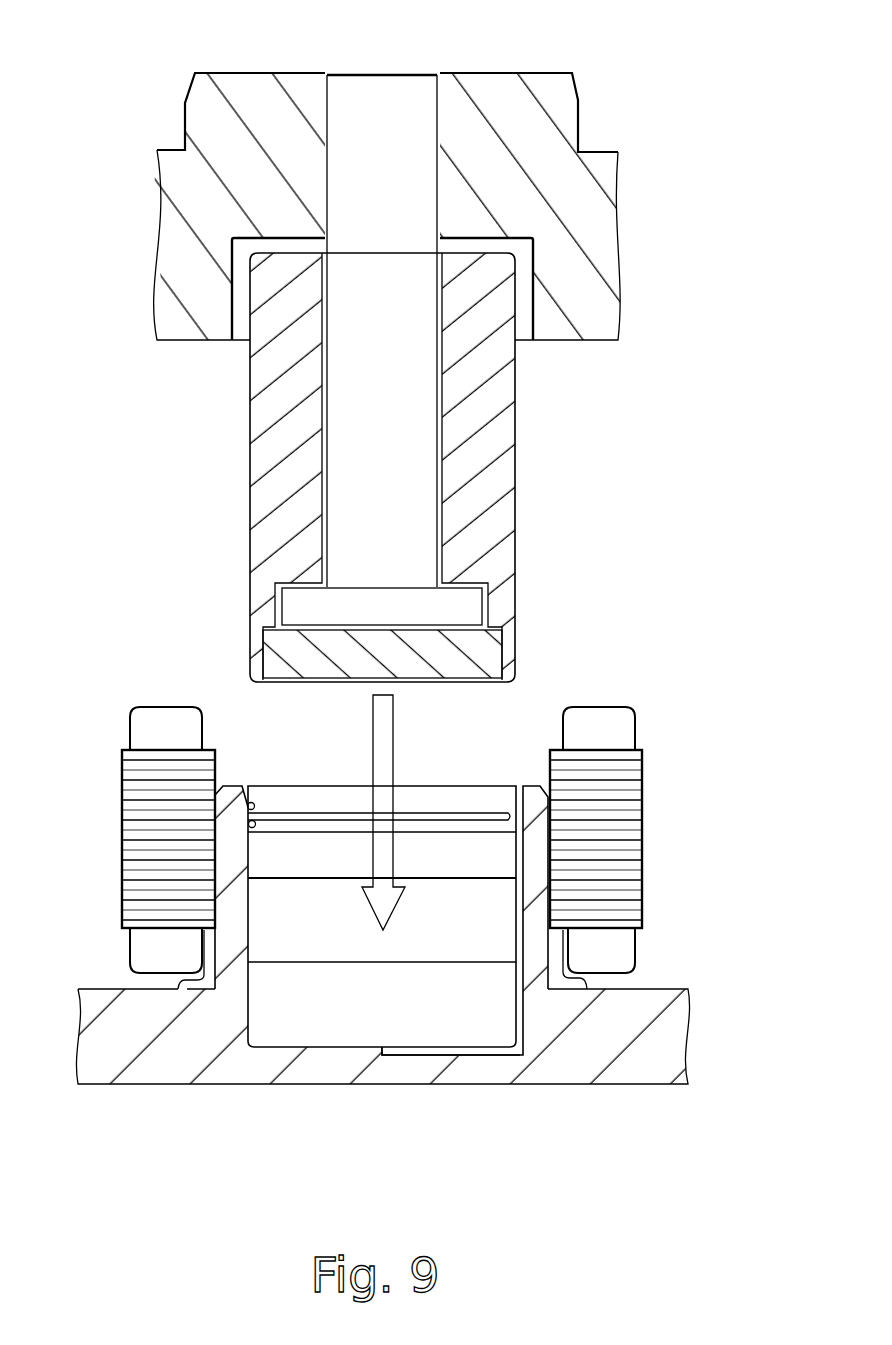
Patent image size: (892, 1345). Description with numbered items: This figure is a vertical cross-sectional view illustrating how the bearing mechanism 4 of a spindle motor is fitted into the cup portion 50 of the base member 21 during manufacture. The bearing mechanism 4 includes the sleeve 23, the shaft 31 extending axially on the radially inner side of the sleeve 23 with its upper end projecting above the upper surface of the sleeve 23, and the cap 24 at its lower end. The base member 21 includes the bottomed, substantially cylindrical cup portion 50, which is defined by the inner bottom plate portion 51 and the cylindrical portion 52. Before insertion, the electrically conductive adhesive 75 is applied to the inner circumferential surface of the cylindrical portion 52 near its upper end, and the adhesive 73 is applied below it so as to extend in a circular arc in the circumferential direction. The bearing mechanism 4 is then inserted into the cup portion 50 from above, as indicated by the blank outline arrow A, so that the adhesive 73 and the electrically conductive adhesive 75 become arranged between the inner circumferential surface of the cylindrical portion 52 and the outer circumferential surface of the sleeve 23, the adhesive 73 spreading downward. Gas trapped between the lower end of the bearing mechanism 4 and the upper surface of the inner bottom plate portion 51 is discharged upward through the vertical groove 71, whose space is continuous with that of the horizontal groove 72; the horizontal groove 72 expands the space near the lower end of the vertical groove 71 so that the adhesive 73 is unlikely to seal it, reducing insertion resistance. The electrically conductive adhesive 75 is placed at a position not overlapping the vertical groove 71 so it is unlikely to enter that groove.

The bearing mechanism 4 is at (230, 457).
The shaft 31 is at (390, 105).
The sleeve 23 is at (493, 433).
The cap 24 is at (430, 668).
The base member 21 is at (573, 1093).
The cup portion 50 is at (192, 1147).
The inner bottom plate portion 51 is at (328, 1066).
The cylindrical portion 52 is at (235, 900).
The vertical groove 71 is at (515, 855).
The horizontal groove 72 is at (477, 1047).
The adhesive 73 is at (257, 825).
The electrically conductive adhesive 75 is at (253, 802).
The arrow outline A is at (383, 858).